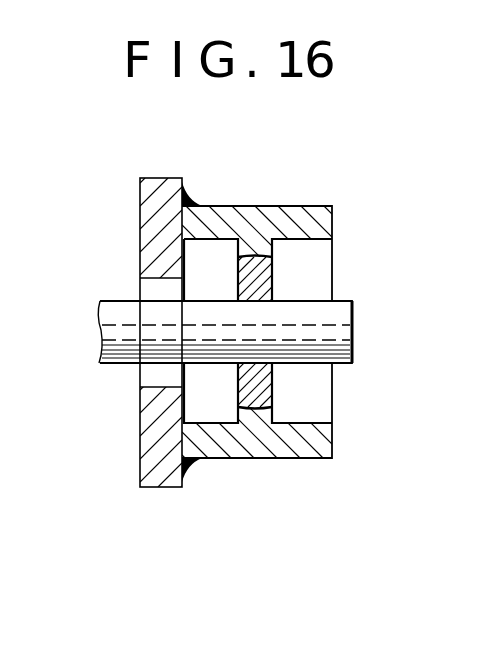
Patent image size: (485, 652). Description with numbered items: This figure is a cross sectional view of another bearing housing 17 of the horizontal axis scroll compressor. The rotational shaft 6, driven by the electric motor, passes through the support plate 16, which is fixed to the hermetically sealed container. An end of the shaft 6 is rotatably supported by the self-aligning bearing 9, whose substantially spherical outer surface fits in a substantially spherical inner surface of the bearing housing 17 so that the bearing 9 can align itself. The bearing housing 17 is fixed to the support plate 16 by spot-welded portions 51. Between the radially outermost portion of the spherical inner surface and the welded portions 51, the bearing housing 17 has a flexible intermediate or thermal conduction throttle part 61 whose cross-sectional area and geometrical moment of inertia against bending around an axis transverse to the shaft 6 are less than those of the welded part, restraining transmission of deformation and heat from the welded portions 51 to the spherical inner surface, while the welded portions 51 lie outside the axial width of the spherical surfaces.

The rotational shaft 6 is at (118, 366).
The self-aligning bearing 9 is at (255, 256).
The support plate 16 is at (183, 182).
The bearing housing 17 is at (233, 440).
The spot-welded portions 51 is at (189, 478).
The intermediate part 61 is at (210, 452).